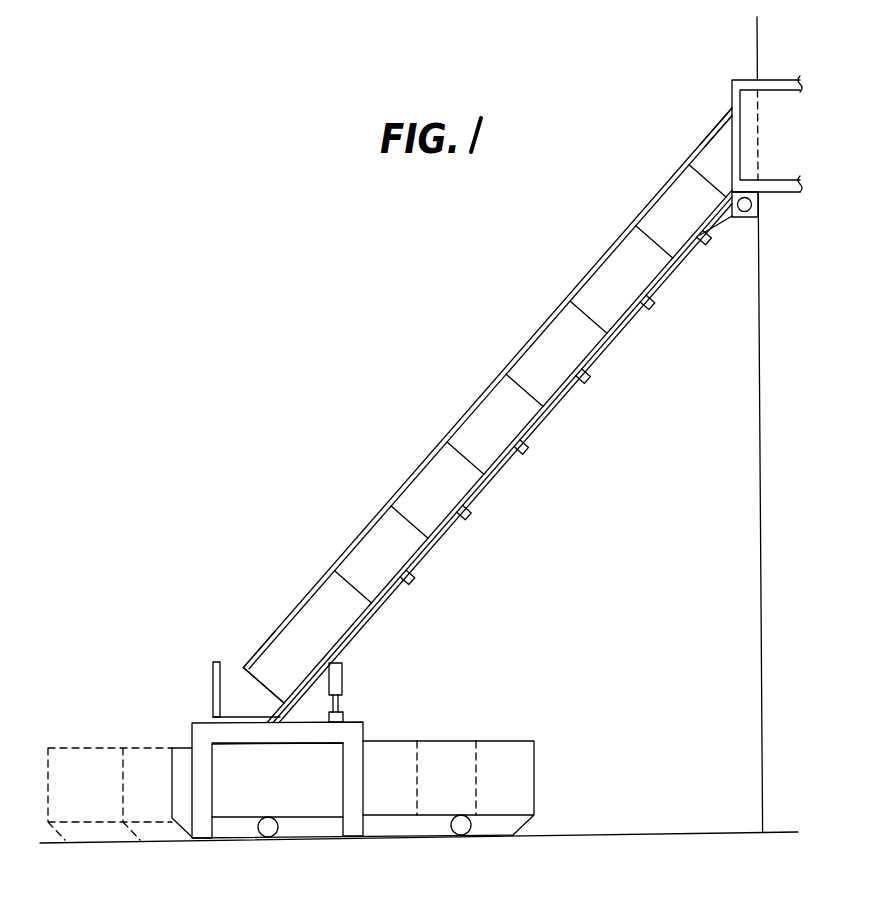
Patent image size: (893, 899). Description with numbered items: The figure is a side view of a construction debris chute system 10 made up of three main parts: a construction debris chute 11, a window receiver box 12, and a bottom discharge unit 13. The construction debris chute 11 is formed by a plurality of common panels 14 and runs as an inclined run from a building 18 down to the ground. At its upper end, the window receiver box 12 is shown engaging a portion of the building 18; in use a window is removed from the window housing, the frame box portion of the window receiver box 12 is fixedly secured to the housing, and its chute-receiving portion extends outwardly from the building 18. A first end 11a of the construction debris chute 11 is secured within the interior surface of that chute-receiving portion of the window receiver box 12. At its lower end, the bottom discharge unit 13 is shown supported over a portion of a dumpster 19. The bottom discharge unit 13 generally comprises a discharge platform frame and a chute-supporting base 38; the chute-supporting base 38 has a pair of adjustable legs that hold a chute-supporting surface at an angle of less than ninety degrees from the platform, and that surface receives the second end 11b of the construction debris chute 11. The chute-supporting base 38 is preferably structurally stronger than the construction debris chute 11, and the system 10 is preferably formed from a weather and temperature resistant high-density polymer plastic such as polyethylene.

The construction debris chute system 10 is at (390, 467).
The construction debris chute 11 is at (431, 408).
The first end 11a is at (732, 106).
The second end 11b is at (248, 678).
The window receiver box 12 is at (712, 62).
The bottom discharge unit 13 is at (339, 699).
The common panels 14 is at (413, 494).
The building 18 is at (760, 446).
The dumpster 19 is at (534, 780).
The chute-supporting base 38 is at (351, 667).